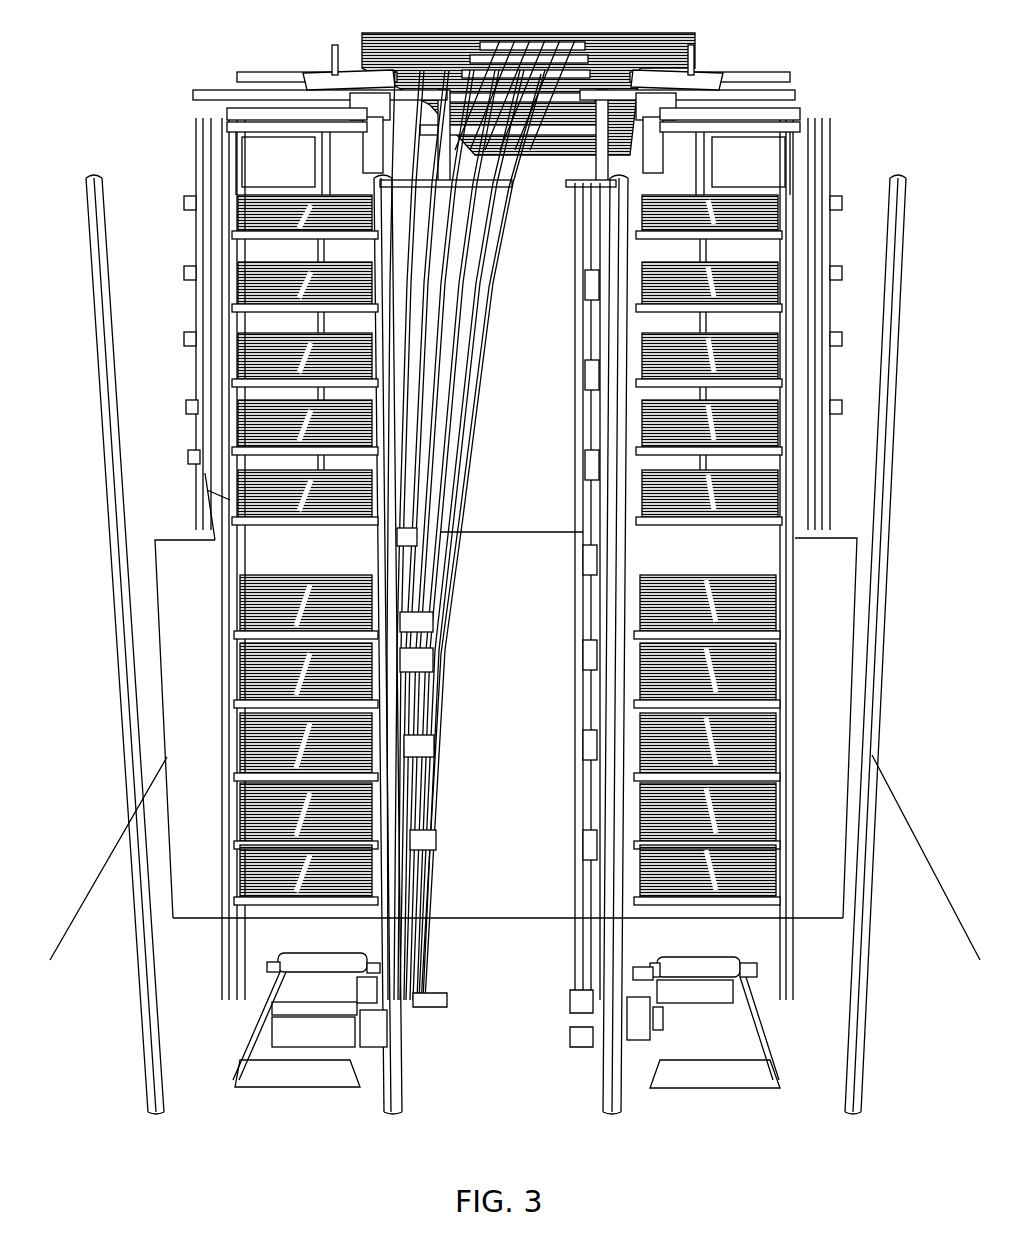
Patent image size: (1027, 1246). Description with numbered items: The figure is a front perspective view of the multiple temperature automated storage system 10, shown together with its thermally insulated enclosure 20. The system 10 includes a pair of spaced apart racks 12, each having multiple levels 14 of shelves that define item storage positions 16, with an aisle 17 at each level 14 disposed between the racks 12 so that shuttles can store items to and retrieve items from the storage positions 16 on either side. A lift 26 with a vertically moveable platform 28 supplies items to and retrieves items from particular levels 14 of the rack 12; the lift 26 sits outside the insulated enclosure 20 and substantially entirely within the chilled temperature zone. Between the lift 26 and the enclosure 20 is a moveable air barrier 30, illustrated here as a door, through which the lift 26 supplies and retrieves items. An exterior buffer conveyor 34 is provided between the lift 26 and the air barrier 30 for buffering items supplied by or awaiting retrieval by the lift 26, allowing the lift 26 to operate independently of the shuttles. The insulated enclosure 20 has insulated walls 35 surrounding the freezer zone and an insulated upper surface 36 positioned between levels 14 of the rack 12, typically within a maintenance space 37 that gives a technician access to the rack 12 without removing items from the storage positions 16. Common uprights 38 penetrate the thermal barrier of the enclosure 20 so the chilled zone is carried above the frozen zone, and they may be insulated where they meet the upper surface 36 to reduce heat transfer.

The multiple temperature automated storage system 10 is at (112, 48).
The racks 12 is at (316, 66).
The levels 14 is at (202, 472).
The item storage positions 16 is at (299, 181).
The aisle 17 is at (500, 1014).
The thermally insulated enclosure 20 is at (202, 512).
The lift 26 is at (642, 130).
The vertically moveable platform 28 is at (276, 858).
The moveable air barrier 30 is at (205, 618).
The exterior buffer conveyor 34 is at (355, 500).
The insulated walls 35 is at (524, 888).
The insulated upper surface 36 is at (533, 399).
The maintenance space 37 is at (434, 543).
The common uprights 38 is at (88, 183).